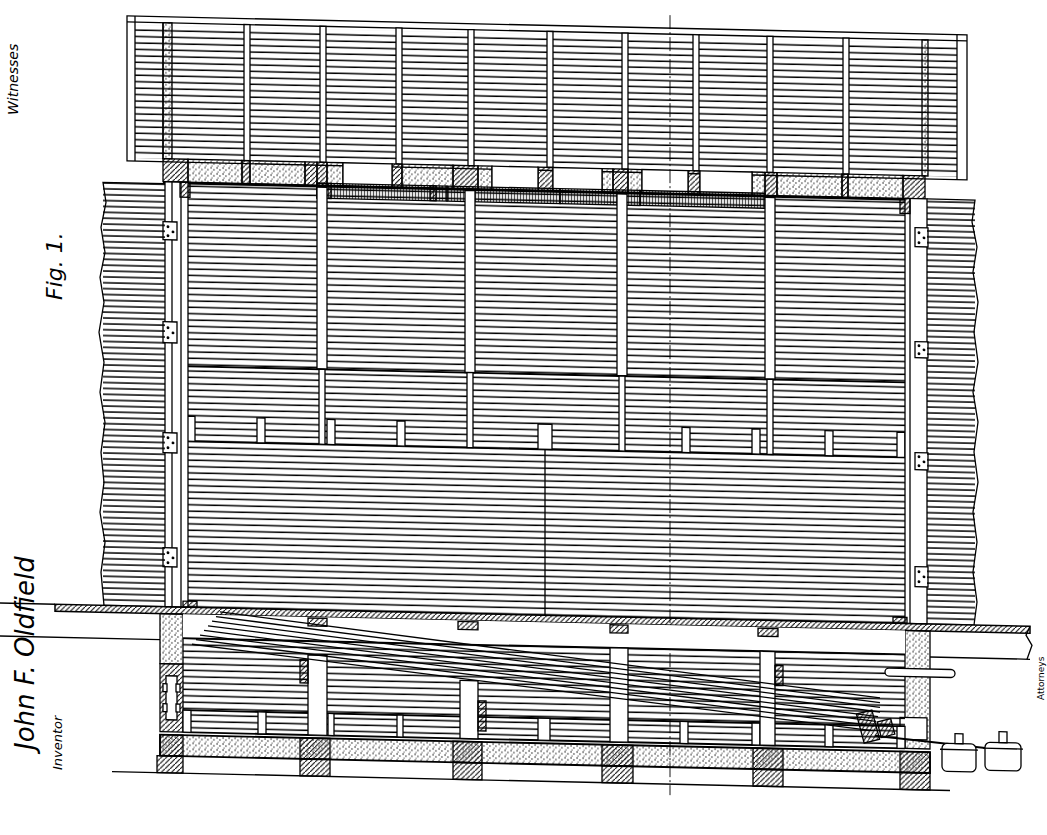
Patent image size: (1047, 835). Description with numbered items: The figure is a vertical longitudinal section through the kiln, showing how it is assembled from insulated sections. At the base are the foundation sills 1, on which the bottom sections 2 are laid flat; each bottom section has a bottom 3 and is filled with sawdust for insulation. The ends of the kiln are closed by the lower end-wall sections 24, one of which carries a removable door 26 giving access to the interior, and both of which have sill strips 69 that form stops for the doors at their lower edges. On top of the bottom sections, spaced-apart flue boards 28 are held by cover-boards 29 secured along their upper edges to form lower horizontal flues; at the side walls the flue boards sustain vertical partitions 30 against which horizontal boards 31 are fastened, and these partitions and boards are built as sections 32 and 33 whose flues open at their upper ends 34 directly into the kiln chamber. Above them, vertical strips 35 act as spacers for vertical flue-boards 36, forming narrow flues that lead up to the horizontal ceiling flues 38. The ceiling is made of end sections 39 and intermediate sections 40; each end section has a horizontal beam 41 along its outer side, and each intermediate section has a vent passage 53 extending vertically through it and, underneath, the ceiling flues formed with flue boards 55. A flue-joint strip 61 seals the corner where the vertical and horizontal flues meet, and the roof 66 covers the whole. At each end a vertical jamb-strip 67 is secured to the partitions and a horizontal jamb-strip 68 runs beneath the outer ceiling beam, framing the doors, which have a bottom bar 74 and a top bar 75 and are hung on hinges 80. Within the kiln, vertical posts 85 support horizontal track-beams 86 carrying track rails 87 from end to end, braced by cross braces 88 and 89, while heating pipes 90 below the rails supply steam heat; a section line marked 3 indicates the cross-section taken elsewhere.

The foundation sills 1 is at (453, 760).
The bottom sections 2 is at (543, 771).
The bottom 3 is at (722, 2).
The lower end-wall sections 24 is at (160, 620).
The removable door 26 is at (160, 690).
The flue boards 28 is at (262, 716).
The cover-boards 29 is at (230, 706).
The vertical partition 30 is at (262, 438).
The horizontal boards 31 is at (350, 435).
The lower flue section 32 is at (366, 528).
The lower flue section 33 is at (725, 536).
The upper ends 34 is at (478, 434).
The vertical strips 35 is at (465, 290).
The vertical flue-boards 36 is at (546, 320).
The horizontal ceiling flues 38 is at (393, 192).
The end ceiling sections 39 is at (252, 180).
The intermediate ceiling sections 40 is at (570, 192).
The horizontal beam 41 is at (163, 178).
The vent passage 53 is at (547, 179).
The flue boards 55 is at (352, 192).
The flue-joint strip 61 is at (433, 192).
The roof 66 is at (547, 98).
The vertical jamb-strip 67 is at (180, 372).
The horizontal jamb-strip 68 is at (180, 187).
The sill strips 69 is at (192, 600).
The bottom bar 74 is at (100, 603).
The top bar 75 is at (103, 180).
The hinges 80 is at (163, 228).
The vertical posts 85 is at (770, 644).
The track-beams 86 is at (544, 633).
The track rails 87 is at (727, 603).
The cross braces 88 is at (610, 616).
The cross braces 89 is at (302, 664).
The heating pipes 90 is at (502, 642).